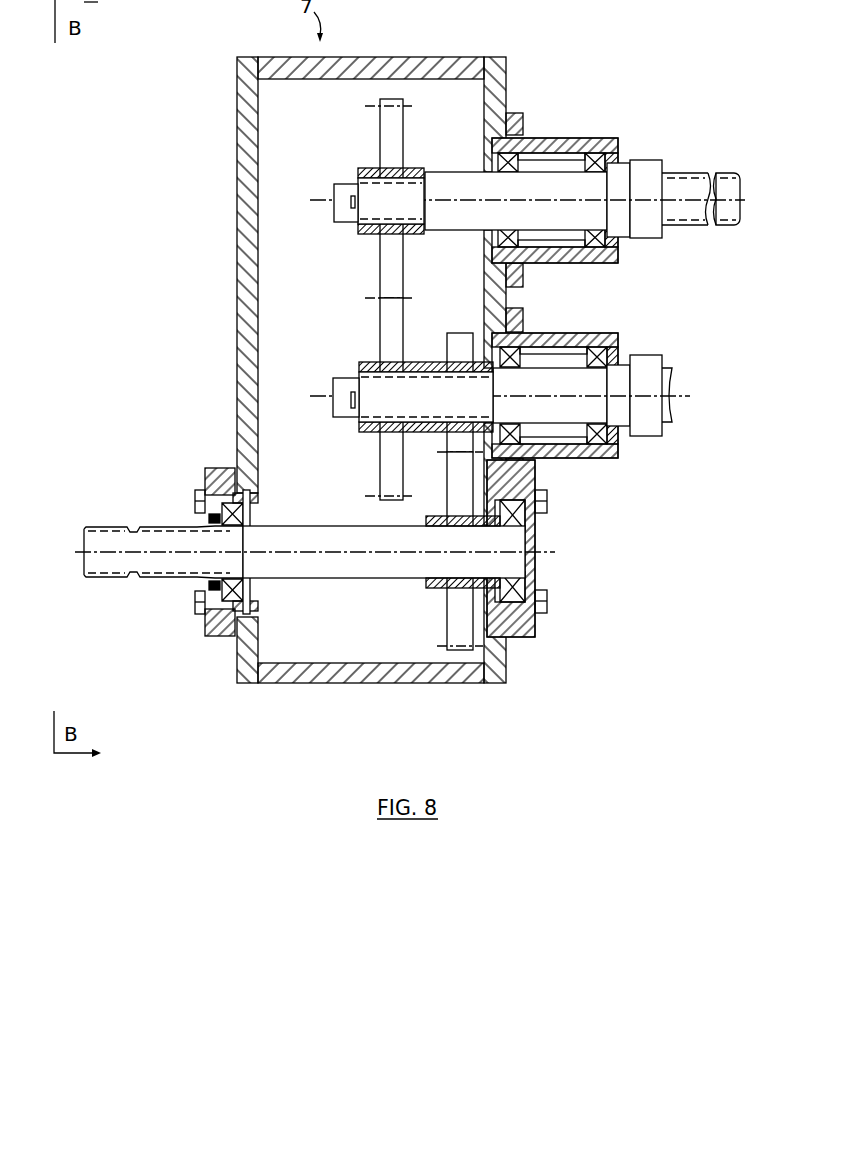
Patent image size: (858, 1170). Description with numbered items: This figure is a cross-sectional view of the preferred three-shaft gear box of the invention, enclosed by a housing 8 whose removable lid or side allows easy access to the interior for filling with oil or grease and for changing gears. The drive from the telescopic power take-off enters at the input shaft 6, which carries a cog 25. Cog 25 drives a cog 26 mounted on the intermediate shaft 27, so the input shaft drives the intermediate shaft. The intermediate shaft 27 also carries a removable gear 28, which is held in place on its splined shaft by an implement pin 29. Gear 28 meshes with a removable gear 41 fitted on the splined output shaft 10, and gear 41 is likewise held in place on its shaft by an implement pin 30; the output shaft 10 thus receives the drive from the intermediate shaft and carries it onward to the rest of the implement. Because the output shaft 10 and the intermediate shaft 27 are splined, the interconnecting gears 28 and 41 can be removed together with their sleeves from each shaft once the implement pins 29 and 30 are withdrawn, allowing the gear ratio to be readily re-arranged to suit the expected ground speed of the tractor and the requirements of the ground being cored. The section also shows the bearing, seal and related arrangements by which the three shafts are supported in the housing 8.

The input shaft 6 is at (107, 565).
The housing 8 is at (237, 170).
The output shaft 10 is at (680, 187).
The cog 25 is at (452, 622).
The cog 26 is at (460, 335).
The intermediate shaft 27 is at (572, 383).
The removable gear 28 is at (385, 327).
The implement pin 29 is at (350, 405).
The implement pin 30 is at (352, 205).
The removable gear 41 is at (385, 133).